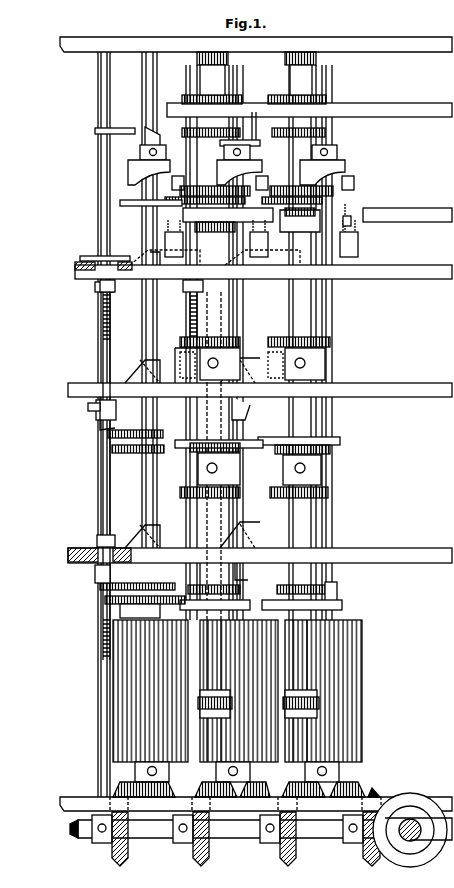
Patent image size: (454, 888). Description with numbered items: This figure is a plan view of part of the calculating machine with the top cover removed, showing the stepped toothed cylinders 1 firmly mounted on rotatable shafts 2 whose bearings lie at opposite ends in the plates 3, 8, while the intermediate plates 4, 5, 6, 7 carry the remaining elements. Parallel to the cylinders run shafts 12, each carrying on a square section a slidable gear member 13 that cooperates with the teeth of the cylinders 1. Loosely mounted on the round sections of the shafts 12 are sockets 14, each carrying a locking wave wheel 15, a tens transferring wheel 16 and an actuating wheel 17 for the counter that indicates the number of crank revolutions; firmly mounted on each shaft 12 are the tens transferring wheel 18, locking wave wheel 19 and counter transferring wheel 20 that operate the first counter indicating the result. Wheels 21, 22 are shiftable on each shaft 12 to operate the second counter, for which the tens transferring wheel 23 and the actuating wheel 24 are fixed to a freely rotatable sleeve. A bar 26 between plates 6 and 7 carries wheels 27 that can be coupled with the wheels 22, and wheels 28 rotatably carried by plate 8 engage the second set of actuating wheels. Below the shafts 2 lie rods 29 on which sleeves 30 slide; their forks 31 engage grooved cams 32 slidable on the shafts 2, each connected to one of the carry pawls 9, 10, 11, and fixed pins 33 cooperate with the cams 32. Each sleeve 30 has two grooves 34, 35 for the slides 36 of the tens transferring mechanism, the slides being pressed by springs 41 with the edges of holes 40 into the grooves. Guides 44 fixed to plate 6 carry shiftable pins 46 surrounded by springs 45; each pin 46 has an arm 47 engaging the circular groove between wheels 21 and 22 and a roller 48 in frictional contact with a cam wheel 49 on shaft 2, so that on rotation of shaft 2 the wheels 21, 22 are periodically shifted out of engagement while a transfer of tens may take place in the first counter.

The stepped toothed cylinder 1 is at (120, 742).
The rotatable shaft 2 is at (147, 69).
The plate 3 is at (437, 805).
The plate 4 is at (433, 552).
The plate 5 is at (435, 388).
The plate 6 is at (437, 279).
The plate 7 is at (430, 117).
The plate 8 is at (417, 52).
The carry pawl 9 is at (105, 610).
The carry pawl 10 is at (125, 470).
The carry pawl 11 is at (263, 140).
The shaft 12 is at (212, 305).
The slidable gear member 13 is at (205, 705).
The socket 14 is at (305, 573).
The locking wave wheel 15 is at (340, 612).
The tens transferring wheel 16 is at (335, 590).
The actuating wheel 17 is at (185, 493).
The tens transferring wheel 18 is at (192, 470).
The locking wave wheel 19 is at (332, 437).
The counter transferring wheel 20 is at (240, 340).
The wheel 21 is at (350, 200).
The wheel 22 is at (277, 188).
The tens transferring wheel 23 is at (325, 133).
The actuating wheel 24 is at (182, 98).
The bar 26 is at (433, 212).
The wheel 27 is at (165, 222).
The wheel 28 is at (210, 54).
The rod 29 is at (103, 513).
The sleeve 30 is at (190, 290).
The fork 31 is at (118, 128).
The grooved cam 32 is at (115, 440).
The pin 33 is at (245, 408).
The groove 34 is at (98, 257).
The groove 35 is at (98, 285).
The slide 36 is at (128, 340).
The hole 40 is at (121, 313).
The spring 41 is at (103, 315).
The guide 44 is at (168, 240).
The spring 45 is at (355, 218).
The shiftable pin 46 is at (352, 232).
The arm 47 is at (128, 201).
The roller 48 is at (176, 180).
The cam wheel 49 is at (131, 128).